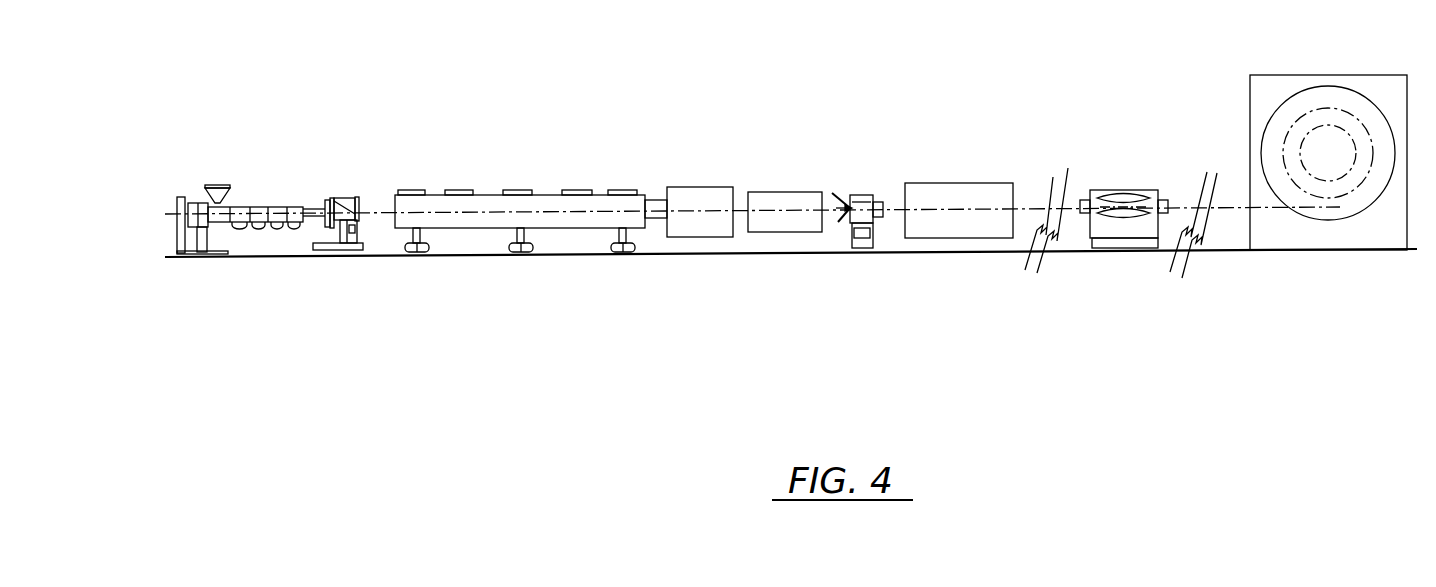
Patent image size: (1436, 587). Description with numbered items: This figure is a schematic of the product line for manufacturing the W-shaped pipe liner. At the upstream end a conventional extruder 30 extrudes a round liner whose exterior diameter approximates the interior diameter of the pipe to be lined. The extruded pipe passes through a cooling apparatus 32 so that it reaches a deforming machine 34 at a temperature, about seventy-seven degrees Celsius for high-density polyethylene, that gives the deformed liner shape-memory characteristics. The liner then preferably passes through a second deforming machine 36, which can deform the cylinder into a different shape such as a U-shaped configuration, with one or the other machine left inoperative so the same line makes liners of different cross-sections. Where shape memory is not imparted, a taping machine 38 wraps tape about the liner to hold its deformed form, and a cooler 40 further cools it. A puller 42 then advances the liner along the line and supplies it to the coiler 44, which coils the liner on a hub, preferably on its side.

The extruder 30 is at (277, 181).
The cooling apparatus 32 is at (433, 203).
The deforming machine 34 is at (693, 185).
The deforming machine 36 is at (782, 190).
The taping machine 38 is at (862, 192).
The cooler 40 is at (967, 182).
The capstan 42 is at (1125, 190).
The coiler 44 is at (1313, 75).